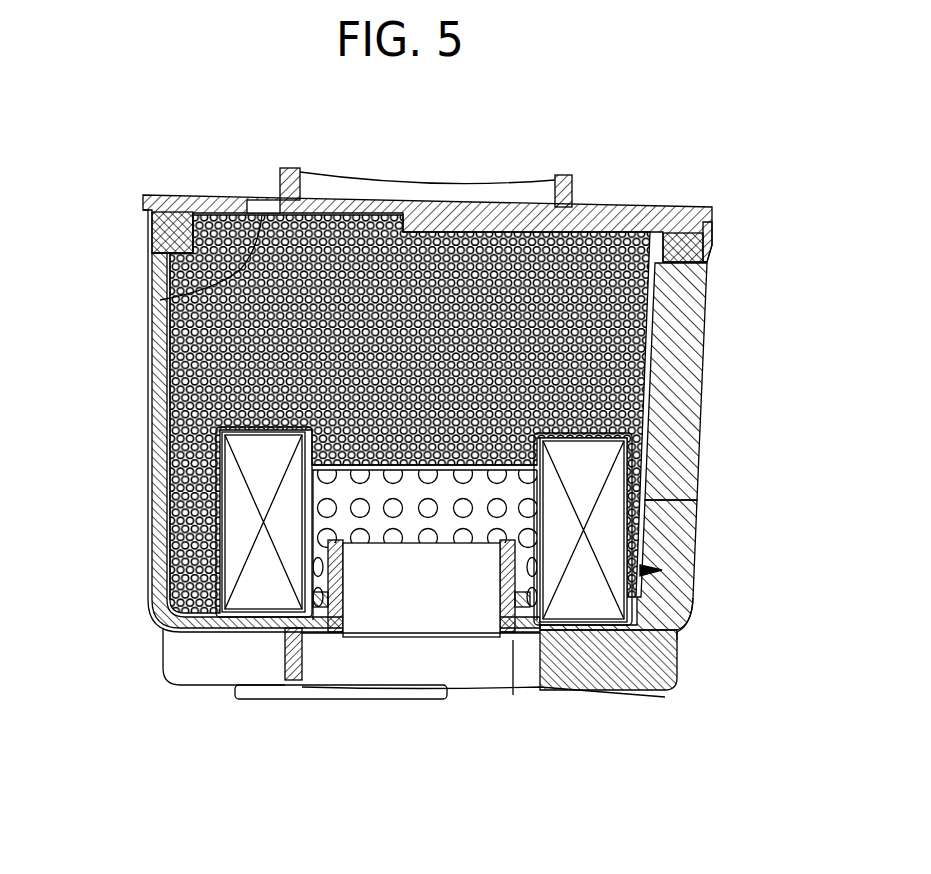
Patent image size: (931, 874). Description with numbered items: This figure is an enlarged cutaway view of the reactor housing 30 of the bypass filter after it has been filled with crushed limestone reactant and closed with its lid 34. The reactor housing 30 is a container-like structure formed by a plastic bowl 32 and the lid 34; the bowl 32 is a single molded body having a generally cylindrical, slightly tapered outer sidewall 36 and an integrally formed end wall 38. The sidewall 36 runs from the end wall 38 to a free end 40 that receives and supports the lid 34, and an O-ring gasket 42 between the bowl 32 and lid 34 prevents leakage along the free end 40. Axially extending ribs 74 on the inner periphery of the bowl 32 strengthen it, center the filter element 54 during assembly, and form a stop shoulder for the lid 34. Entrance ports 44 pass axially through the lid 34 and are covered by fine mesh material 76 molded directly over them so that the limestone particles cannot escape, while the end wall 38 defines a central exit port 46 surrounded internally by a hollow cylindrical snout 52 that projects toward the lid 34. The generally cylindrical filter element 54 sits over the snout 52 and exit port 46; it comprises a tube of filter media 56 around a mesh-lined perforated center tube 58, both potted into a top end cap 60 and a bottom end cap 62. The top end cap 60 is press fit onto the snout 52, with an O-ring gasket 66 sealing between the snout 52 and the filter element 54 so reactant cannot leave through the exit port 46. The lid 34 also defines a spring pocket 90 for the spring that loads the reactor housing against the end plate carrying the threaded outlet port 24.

The central threaded outlet port 24 is at (423, 675).
The reactor housing 30 is at (145, 560).
The bowl 32 is at (138, 495).
The lid 34 is at (603, 207).
The outer sidewall 36 is at (150, 370).
The end wall 38 is at (677, 655).
The free end 40 is at (150, 248).
The O-ring gasket 42 is at (710, 243).
The entrance ports 44 is at (262, 205).
The exit port 46 is at (415, 617).
The snout 52 is at (497, 603).
The filter element 54 is at (692, 583).
The filter media 56 is at (590, 530).
The center tube 58 is at (373, 527).
The top end cap 60 is at (678, 627).
The bottom end cap 62 is at (702, 392).
The O-ring gasket 66 is at (585, 620).
The axially extending ribs 74 is at (705, 272).
The fine mesh material 76 is at (160, 300).
The spring pocket 90 is at (318, 185).